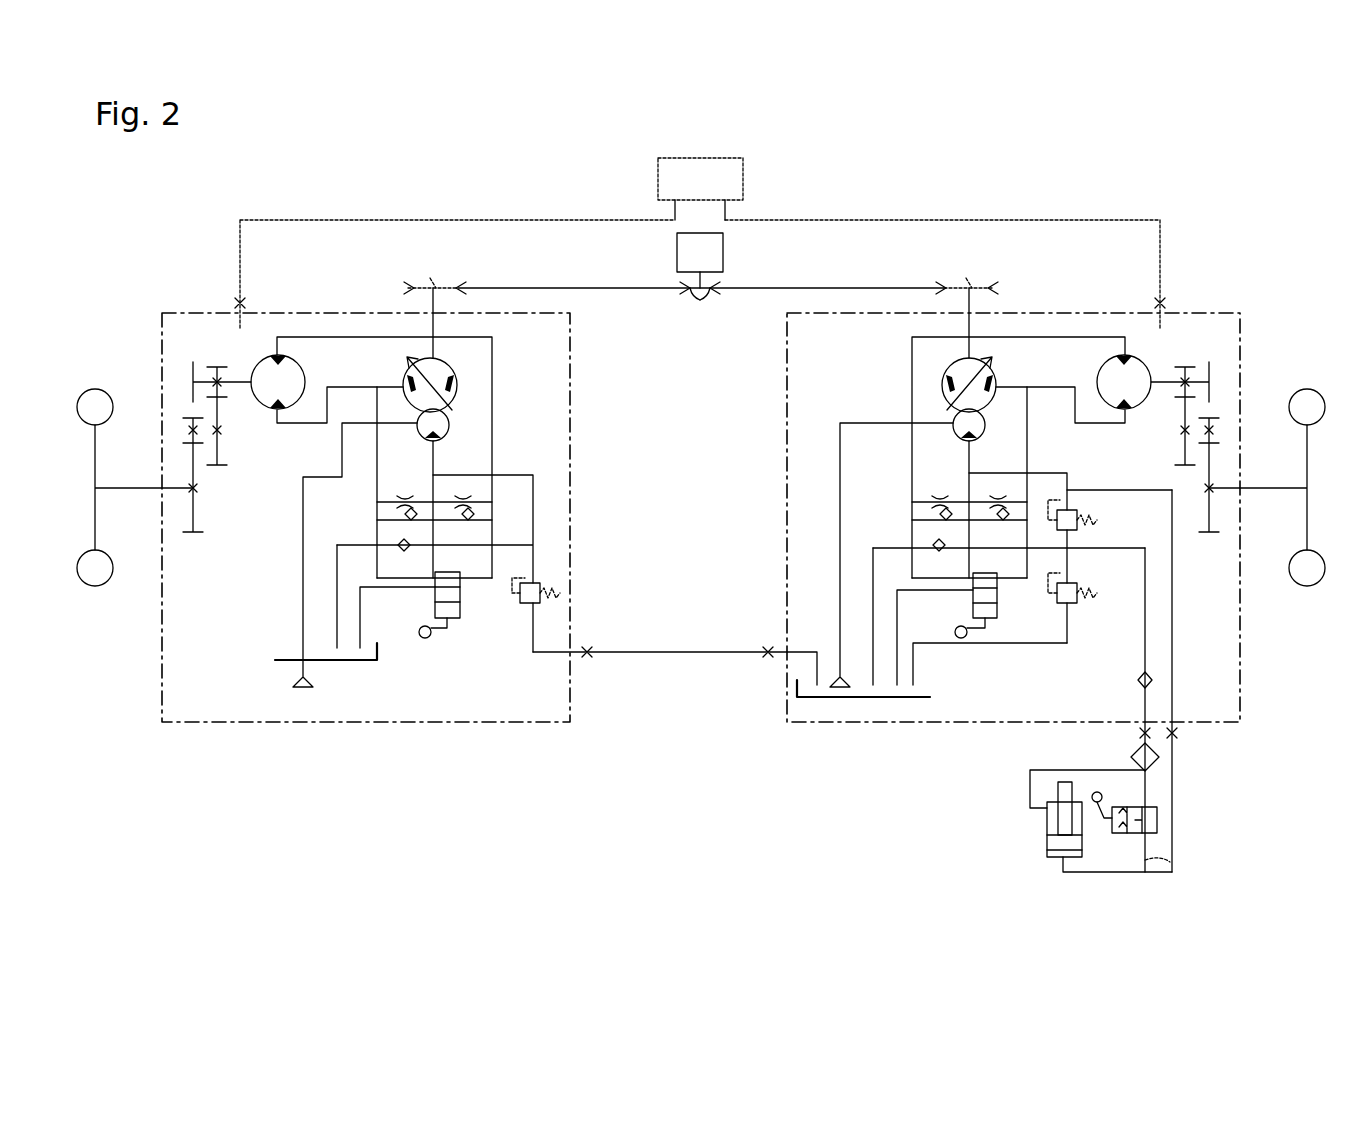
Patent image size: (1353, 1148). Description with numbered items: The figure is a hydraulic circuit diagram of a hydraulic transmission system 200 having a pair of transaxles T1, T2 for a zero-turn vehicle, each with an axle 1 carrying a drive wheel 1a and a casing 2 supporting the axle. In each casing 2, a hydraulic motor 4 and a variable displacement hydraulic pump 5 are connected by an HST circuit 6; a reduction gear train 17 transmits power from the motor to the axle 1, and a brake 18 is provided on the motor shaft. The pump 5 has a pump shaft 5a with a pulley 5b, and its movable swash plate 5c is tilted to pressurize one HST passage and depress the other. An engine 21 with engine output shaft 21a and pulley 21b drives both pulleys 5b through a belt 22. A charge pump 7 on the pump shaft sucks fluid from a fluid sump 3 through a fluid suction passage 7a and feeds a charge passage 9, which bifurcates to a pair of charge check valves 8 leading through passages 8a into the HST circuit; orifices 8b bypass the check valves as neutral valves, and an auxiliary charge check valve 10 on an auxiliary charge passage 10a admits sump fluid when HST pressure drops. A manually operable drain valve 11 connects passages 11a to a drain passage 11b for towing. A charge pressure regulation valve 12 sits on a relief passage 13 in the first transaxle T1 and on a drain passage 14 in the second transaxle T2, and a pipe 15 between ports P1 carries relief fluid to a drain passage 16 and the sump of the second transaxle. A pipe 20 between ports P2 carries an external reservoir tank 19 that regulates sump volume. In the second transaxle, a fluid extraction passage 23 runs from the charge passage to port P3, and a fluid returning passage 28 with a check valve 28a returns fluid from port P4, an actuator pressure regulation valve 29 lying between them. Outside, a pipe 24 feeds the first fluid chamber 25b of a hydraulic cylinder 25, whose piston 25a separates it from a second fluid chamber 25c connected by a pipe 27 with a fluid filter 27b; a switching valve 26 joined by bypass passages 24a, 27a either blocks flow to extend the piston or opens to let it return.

The axle 1 is at (118, 488).
The drive wheel 1a is at (97, 389).
The casing 2 is at (571, 392).
The fluid sump 3 is at (275, 658).
The hydraulic motor 4 is at (297, 372).
The hydraulic pump 5 is at (448, 371).
The pump shaft 5a is at (415, 293).
The pulley 5b is at (706, 268).
The movable swash plate 5c is at (455, 418).
The HST circuit 6 is at (340, 378).
The charge pump 7 is at (441, 438).
The fluid suction passage 7a is at (342, 460).
The charge check valve 8 is at (466, 522).
The passage 8a is at (492, 412).
The orifice 8b is at (992, 498).
The charge passage 9 is at (530, 540).
The auxiliary charge check valve 10 is at (930, 550).
The auxiliary charge passage 10a is at (345, 547).
The drain valve 11 is at (430, 625).
The passage 11a is at (378, 585).
The drain passage 11b is at (388, 590).
The charge pressure regulation valve 12 is at (538, 605).
The relief passage 13 is at (536, 570).
The drain passage 14 is at (1068, 566).
The pipe 15 is at (683, 652).
The drain passage 16 is at (800, 652).
The reduction gear train 17 is at (236, 491).
The brake 18 is at (197, 362).
The external reservoir tank 19 is at (658, 178).
The pipe 20 is at (330, 220).
The engine 21 is at (677, 258).
The engine output shaft 21a is at (685, 307).
The pulley 21b is at (725, 314).
The belt 22 is at (571, 288).
The fluid extraction passage 23 is at (1173, 612).
The pipe 24 is at (1135, 880).
The bypass passage 24a is at (1173, 860).
The hydraulic cylinder 25 is at (1083, 845).
The piston 25a is at (1047, 843).
The first fluid chamber 25b is at (1055, 858).
The second fluid chamber 25c is at (1047, 820).
The switching valve 26 is at (1160, 825).
The pipe 27 is at (1078, 770).
The bypass passage 27a is at (1148, 788).
The fluid filter 27b is at (1160, 758).
The fluid returning passage 28 is at (1145, 650).
The check valve 28a is at (1136, 680).
The actuator pressure regulation valve 29 is at (1085, 512).
The hydraulic transmission system 200 is at (524, 181).
The first transaxle T1 is at (199, 273).
The second transaxle T2 is at (1208, 275).
The port P1 is at (590, 660).
The port P2 is at (248, 303).
The port P3 is at (1178, 735).
The port P4 is at (1136, 733).